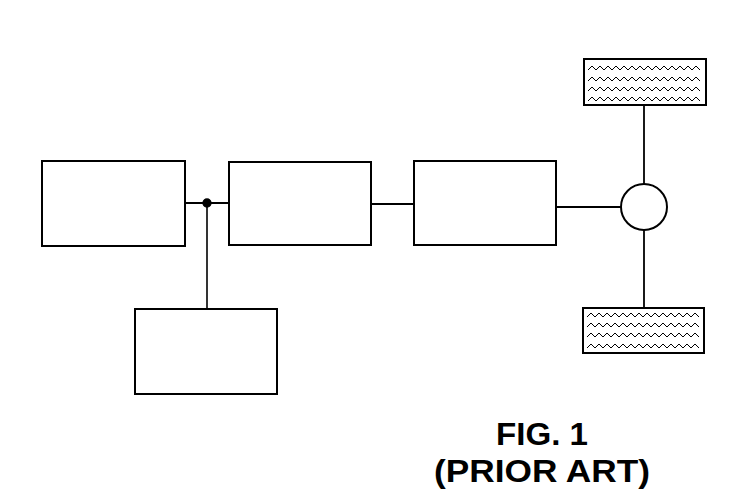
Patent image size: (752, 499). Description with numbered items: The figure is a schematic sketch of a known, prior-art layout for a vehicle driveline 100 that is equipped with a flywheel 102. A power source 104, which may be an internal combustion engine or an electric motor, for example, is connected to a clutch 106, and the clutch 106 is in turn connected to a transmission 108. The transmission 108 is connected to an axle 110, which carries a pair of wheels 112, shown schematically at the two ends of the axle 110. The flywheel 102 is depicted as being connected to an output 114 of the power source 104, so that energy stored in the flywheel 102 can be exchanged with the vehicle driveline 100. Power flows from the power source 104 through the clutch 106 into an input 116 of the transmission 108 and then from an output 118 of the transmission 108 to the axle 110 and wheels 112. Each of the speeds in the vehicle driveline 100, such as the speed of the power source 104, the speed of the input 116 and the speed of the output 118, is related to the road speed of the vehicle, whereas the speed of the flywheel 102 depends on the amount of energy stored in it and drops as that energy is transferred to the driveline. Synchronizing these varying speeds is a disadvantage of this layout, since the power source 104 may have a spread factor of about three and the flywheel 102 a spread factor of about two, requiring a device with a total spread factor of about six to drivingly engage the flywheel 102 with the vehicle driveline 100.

The vehicle driveline 100 is at (112, 66).
The flywheel 102 is at (278, 351).
The power source 104 is at (111, 160).
The clutch 106 is at (298, 161).
The transmission 108 is at (484, 160).
The axle 110 is at (646, 276).
The wheels 112 is at (643, 58).
The output of the power source 114 is at (194, 199).
The input of the transmission 116 is at (392, 208).
The output of the transmission 118 is at (581, 209).